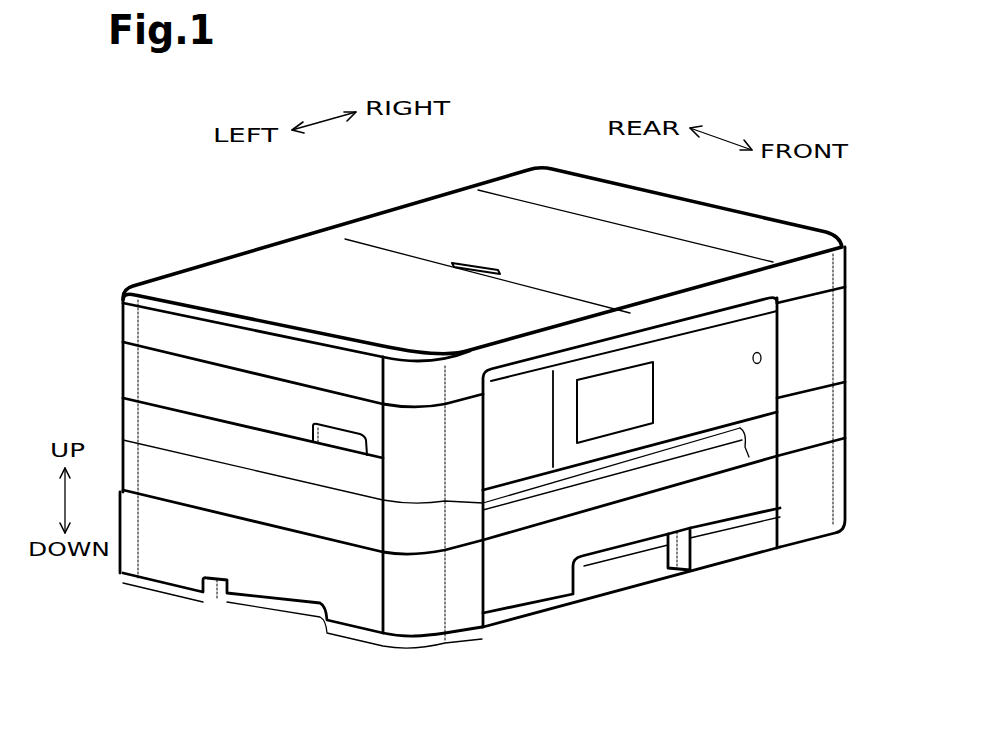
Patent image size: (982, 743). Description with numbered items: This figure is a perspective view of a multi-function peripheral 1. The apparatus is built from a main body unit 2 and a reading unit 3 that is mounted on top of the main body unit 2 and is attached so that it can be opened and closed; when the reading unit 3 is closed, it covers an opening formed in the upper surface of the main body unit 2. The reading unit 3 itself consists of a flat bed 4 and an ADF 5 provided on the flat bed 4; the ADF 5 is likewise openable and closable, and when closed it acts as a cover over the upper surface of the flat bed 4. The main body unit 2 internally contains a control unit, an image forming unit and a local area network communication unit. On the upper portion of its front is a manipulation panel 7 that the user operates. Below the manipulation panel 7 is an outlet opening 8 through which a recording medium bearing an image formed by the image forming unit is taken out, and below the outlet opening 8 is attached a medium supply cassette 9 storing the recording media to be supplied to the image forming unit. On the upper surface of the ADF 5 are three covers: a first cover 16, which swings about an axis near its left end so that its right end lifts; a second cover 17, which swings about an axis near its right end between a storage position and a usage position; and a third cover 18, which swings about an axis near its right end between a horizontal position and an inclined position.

The multi-function peripheral 1 is at (582, 125).
The main body unit 2 is at (133, 471).
The reading unit 3 is at (82, 310).
The flat bed 4 is at (133, 372).
The ADF 5 is at (133, 322).
The manipulation panel 7 is at (710, 355).
The outlet opening 8 is at (602, 471).
The medium supply cassette 9 is at (727, 520).
The first cover 16 is at (253, 268).
The second cover 17 is at (430, 218).
The third cover 18 is at (537, 184).